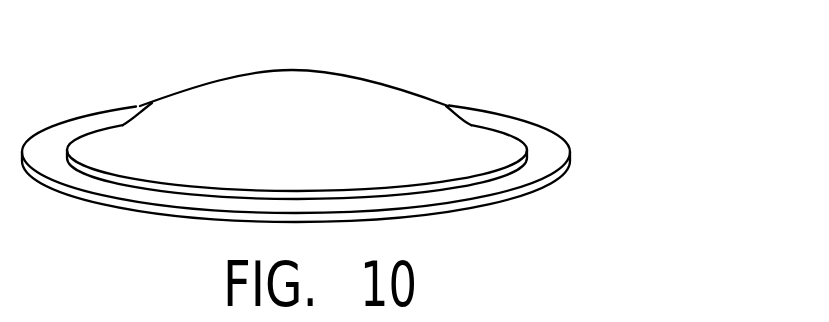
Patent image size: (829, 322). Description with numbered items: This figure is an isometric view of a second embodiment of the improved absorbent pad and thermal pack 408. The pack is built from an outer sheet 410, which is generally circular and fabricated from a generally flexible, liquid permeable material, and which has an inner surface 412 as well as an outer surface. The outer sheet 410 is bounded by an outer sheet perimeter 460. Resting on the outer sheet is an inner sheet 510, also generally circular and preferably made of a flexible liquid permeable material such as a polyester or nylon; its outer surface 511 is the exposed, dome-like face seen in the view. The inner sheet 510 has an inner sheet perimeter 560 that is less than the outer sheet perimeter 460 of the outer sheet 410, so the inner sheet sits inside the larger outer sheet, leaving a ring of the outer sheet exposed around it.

The absorbent pad and thermal pack 408 is at (452, 58).
The outer sheet 410 is at (482, 208).
The inner surface 412 is at (555, 153).
The outer sheet perimeter 460 is at (565, 173).
The inner sheet 510 is at (293, 77).
The outer surface 511 is at (180, 103).
The inner sheet perimeter 560 is at (503, 148).